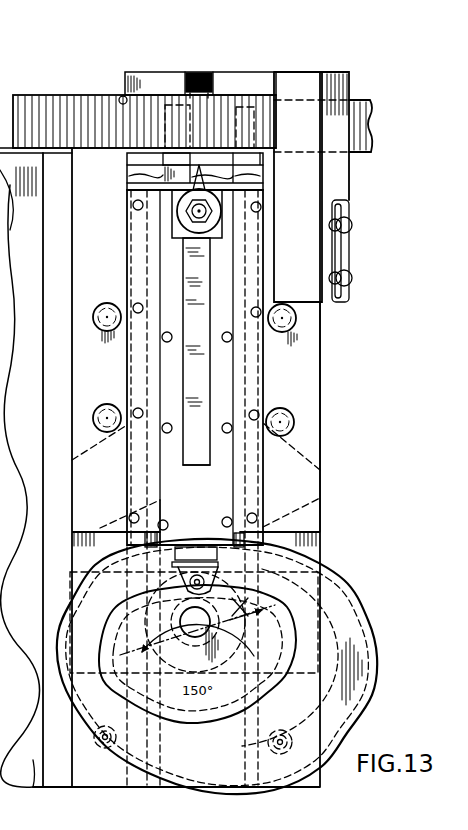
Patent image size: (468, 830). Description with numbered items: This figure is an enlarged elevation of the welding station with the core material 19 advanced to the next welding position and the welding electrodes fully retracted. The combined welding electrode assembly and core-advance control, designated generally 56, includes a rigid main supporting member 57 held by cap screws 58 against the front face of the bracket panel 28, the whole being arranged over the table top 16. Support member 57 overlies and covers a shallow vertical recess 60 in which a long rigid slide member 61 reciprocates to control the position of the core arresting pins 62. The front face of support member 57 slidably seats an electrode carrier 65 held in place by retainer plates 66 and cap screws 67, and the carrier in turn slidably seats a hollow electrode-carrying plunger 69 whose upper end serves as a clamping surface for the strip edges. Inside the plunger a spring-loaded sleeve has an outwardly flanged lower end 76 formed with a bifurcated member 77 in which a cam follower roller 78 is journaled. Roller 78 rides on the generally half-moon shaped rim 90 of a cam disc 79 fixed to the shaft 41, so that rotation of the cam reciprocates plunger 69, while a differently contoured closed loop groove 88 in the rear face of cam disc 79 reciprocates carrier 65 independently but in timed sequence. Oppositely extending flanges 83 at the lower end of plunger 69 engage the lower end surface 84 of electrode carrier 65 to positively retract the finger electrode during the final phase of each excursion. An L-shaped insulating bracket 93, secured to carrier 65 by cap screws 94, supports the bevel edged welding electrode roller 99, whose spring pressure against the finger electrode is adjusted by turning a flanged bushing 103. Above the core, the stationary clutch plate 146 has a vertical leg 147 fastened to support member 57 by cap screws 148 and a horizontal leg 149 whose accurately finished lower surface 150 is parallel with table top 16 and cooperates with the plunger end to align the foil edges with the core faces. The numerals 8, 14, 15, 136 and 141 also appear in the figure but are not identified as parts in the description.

The section line 8- 8 is at (200, 72).
The section line 14- 14 is at (87, 310).
The frame wall 15 is at (53, 433).
The table top 16 is at (5, 120).
The core material 19 is at (82, 95).
The bracket panel 28 is at (28, 810).
The shaft 41 is at (205, 646).
The welding electrode assembly 56 is at (376, 386).
The main supporting member 57 is at (82, 252).
The cap screws 58 is at (93, 410).
The vertical recess 60 is at (142, 798).
The slide member 61 is at (128, 178).
The core arresting pins 62 is at (168, 110).
The electrode carrier 65 is at (143, 545).
The retainer plates 66 is at (127, 270).
The cap screws 67 is at (135, 207).
The electrode-carrying plunger 69 is at (185, 505).
The flanged lower end 76 is at (271, 576).
The bifurcated member 77 is at (170, 588).
The cam follower roller 78 is at (203, 626).
The cam disc 79 is at (265, 692).
The flanges 83 is at (177, 563).
The lower end surface 84 is at (167, 545).
The closed loop groove 88 is at (355, 624).
The rim 90 is at (205, 735).
The L-shaped bracket 93 is at (211, 287).
The cap screws 94 is at (163, 340).
The welding electrode roller 99 is at (265, 184).
The flanged bushing 103 is at (222, 226).
The spacer block 136 is at (250, 150).
The frame portion 141 is at (78, 138).
The stationary clutch plate 146 is at (272, 70).
The vertical leg 147 is at (344, 197).
The cap screws 148 is at (353, 226).
The horizontal leg 149 is at (135, 72).
The lower surface 150 is at (122, 96).